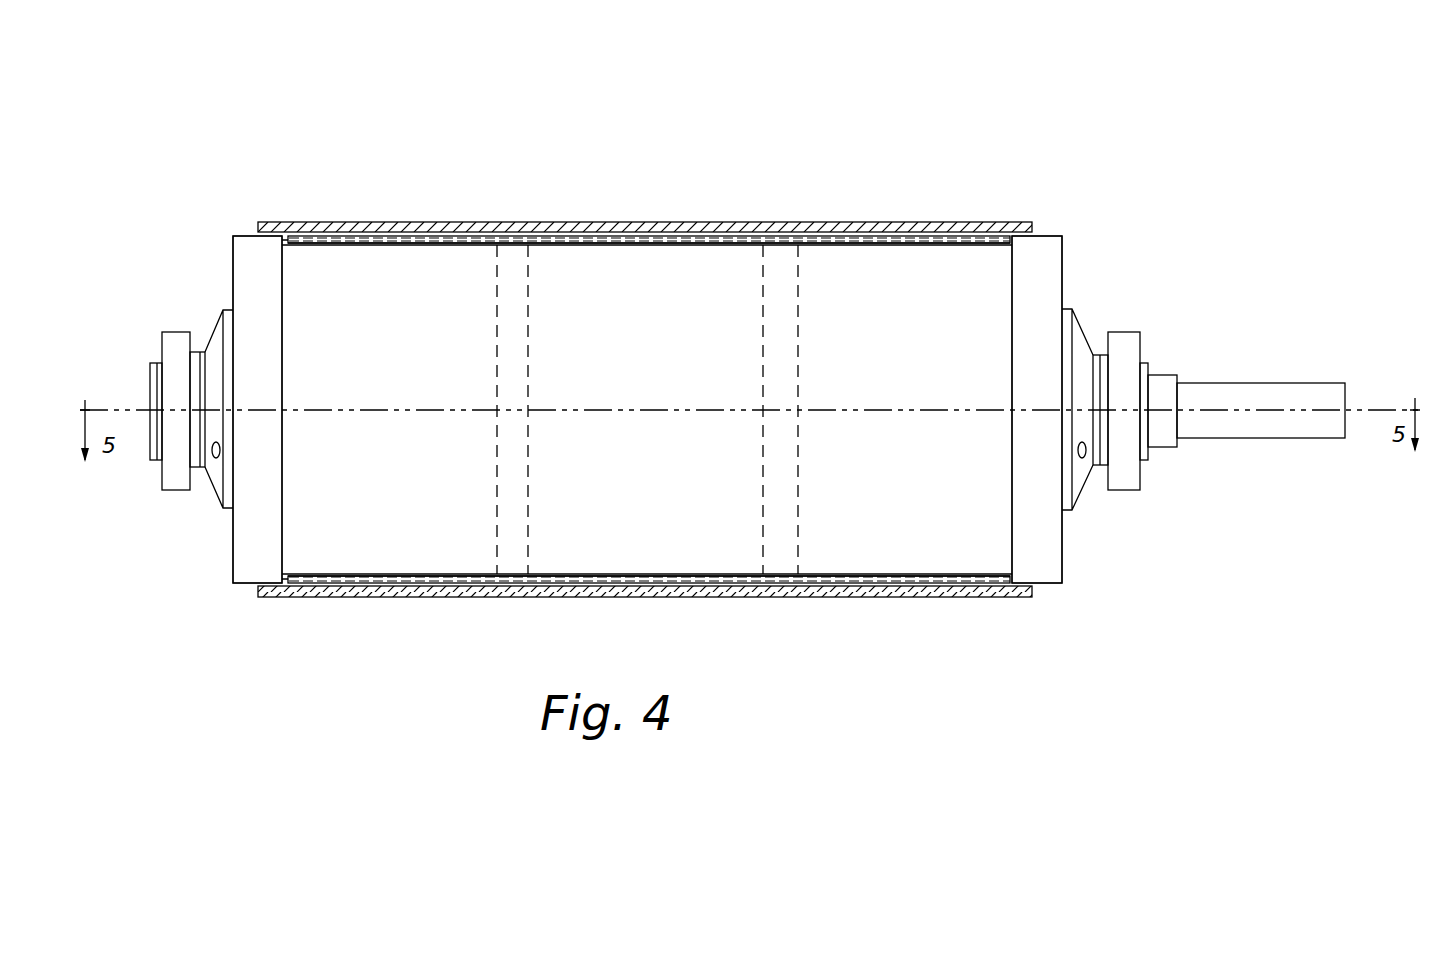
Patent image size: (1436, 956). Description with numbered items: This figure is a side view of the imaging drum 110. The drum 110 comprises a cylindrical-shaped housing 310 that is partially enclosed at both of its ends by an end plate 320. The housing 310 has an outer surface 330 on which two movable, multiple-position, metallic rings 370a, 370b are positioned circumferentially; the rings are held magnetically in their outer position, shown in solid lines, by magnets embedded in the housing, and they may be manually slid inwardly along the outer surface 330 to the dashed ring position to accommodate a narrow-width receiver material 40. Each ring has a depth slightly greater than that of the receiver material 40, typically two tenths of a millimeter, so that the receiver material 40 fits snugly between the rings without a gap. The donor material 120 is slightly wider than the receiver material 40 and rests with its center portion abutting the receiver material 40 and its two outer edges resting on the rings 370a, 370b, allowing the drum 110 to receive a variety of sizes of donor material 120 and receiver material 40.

The imaging drum 110 is at (703, 63).
The donor material 120 is at (660, 223).
The outer surface 330 is at (700, 245).
The cylindrical-shaped housing 310 is at (385, 250).
The receiver material 40 is at (640, 248).
The movable multiple-position metallic ring 370a is at (248, 245).
The movable multiple-position metallic ring 370b is at (1040, 243).
The end plate 320 is at (203, 288).